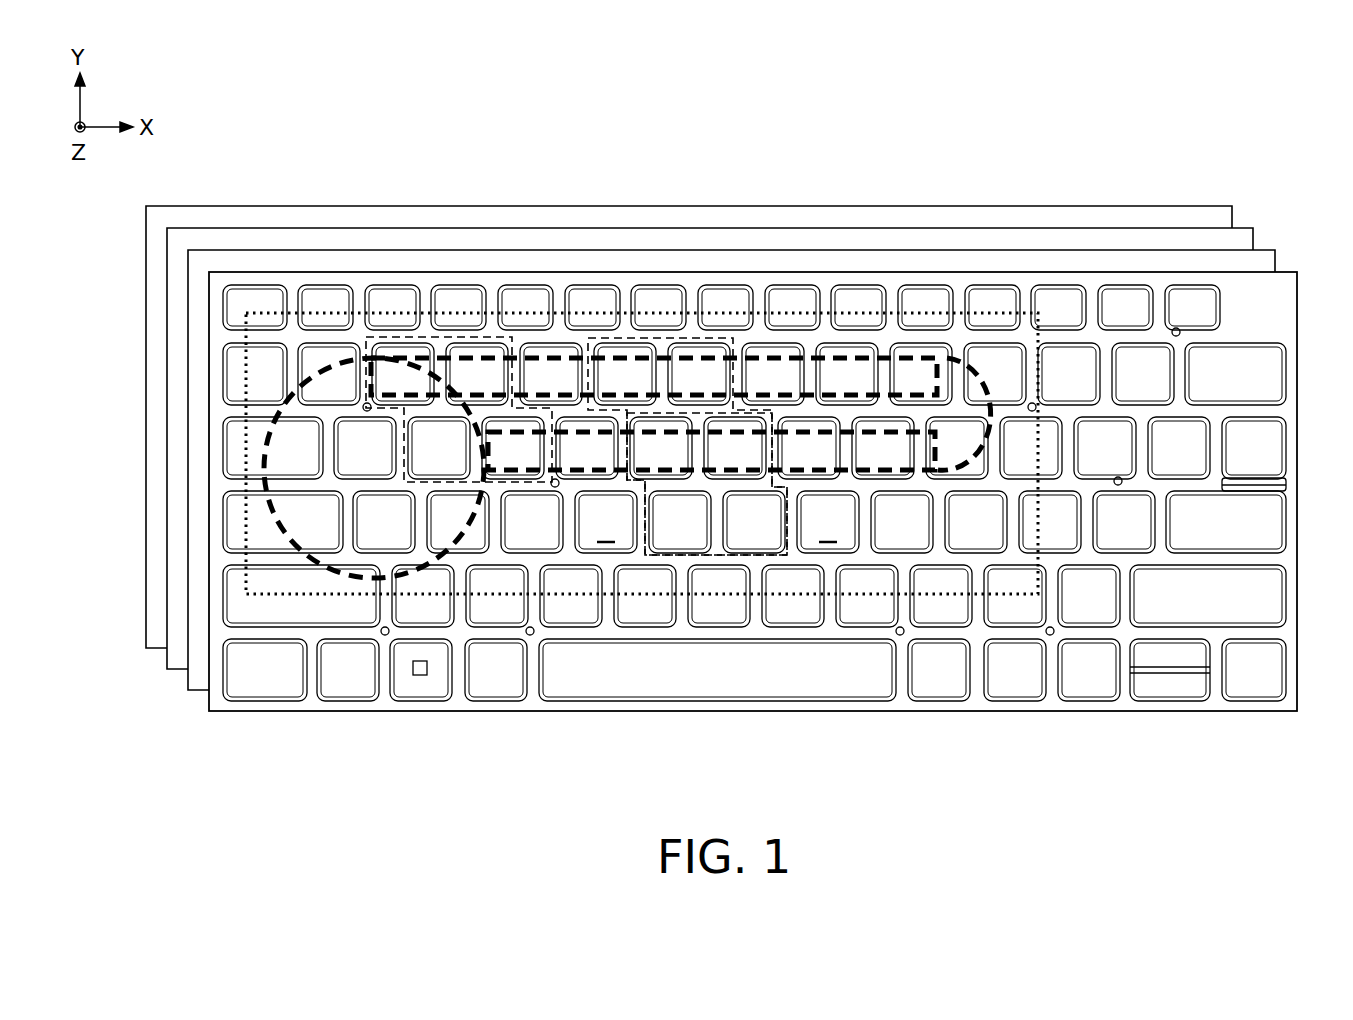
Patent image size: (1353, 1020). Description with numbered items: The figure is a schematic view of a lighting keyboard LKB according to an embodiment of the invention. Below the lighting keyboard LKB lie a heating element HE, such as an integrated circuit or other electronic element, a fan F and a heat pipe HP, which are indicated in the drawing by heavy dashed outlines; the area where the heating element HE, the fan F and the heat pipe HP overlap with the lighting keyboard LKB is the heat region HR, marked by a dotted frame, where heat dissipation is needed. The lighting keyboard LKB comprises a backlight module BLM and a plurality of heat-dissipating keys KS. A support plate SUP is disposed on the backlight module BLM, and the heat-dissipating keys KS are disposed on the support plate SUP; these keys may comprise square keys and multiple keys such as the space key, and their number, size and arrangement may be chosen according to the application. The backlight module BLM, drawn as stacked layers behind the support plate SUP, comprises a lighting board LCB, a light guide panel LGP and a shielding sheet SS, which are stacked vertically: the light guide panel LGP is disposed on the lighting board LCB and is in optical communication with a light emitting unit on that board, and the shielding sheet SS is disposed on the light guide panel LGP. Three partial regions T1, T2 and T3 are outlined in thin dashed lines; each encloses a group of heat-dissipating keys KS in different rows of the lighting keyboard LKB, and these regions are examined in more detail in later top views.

The lighting keyboard LKB is at (284, 112).
The backlight module BLM is at (265, 725).
The lighting board LCB is at (152, 649).
The light guide panel LGP is at (172, 670).
The shielding sheet SS is at (192, 691).
The support plate SUP is at (1258, 711).
The heat-dissipating keys KS is at (707, 612).
The heat region HR is at (293, 312).
The partial region T1 is at (627, 338).
The partial region T2 is at (425, 337).
The partial region T3 is at (757, 415).
The heat pipe HP is at (882, 357).
The heating element HE is at (950, 357).
The fan F is at (264, 410).